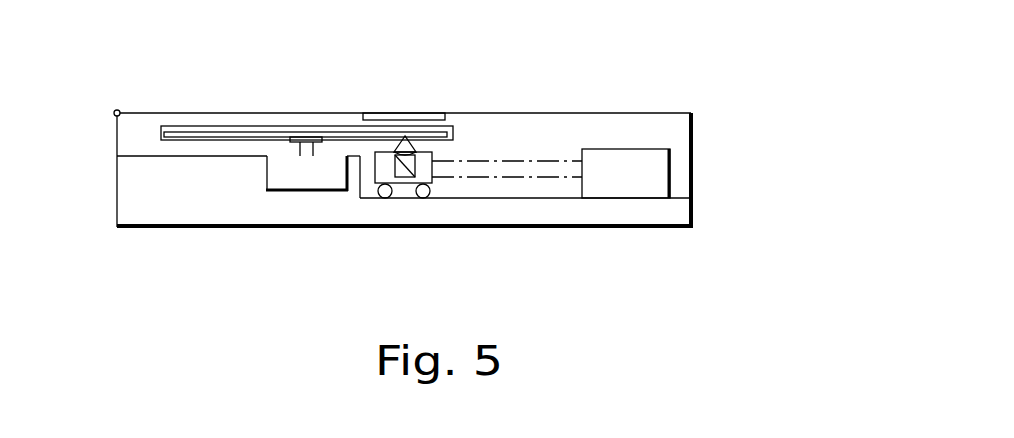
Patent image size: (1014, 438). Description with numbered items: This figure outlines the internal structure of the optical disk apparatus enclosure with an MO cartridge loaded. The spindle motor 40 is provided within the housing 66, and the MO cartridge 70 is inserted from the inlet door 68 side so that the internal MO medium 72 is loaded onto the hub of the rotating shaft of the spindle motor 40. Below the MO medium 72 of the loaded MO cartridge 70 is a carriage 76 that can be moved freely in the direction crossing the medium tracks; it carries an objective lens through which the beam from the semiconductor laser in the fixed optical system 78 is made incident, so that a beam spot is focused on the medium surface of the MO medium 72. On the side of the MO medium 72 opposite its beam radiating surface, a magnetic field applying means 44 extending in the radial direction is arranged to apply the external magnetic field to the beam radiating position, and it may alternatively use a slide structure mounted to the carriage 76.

The spindle motor 40 is at (285, 180).
The magnetic field applying means 44 is at (438, 120).
The housing 66 is at (660, 113).
The inlet door 68 is at (117, 143).
The MO cartridge 70 is at (190, 123).
The MO medium 72 is at (338, 125).
The carriage 76 is at (403, 180).
The fixed optical system 78 is at (648, 173).